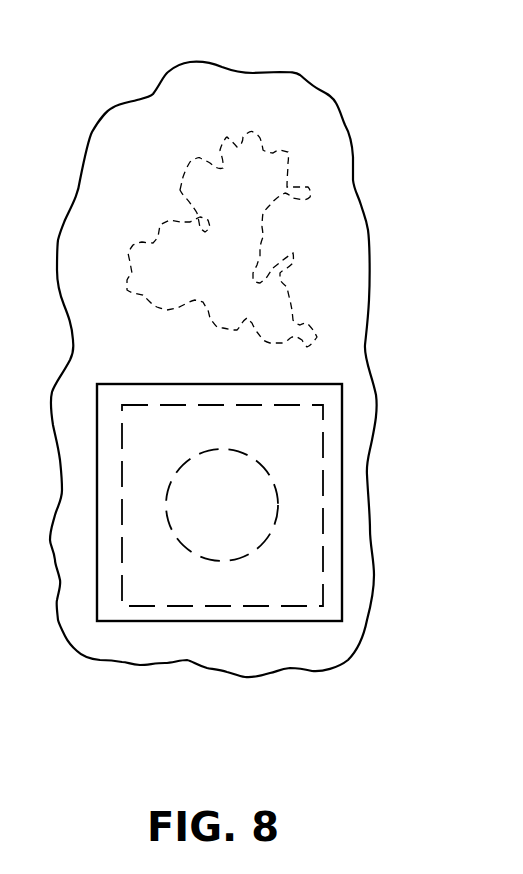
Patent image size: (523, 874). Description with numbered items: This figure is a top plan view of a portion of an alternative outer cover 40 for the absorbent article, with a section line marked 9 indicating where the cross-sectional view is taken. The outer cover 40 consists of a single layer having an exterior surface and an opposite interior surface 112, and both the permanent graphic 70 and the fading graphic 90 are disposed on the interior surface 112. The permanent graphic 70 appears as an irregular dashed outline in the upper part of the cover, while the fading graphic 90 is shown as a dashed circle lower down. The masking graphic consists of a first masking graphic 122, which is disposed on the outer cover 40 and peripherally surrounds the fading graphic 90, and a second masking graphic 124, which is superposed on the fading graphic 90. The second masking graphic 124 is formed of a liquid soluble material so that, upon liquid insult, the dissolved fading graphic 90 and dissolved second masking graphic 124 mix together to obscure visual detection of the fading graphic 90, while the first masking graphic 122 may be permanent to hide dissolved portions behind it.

The outer cover 40 is at (117, 156).
The permanent graphic 70 is at (180, 192).
The fading graphic 90 is at (168, 522).
The interior surface 112 is at (330, 133).
The first masking graphic 122 is at (352, 343).
The second masking graphic 124 is at (342, 452).
The section line 9- 9 is at (157, 38).